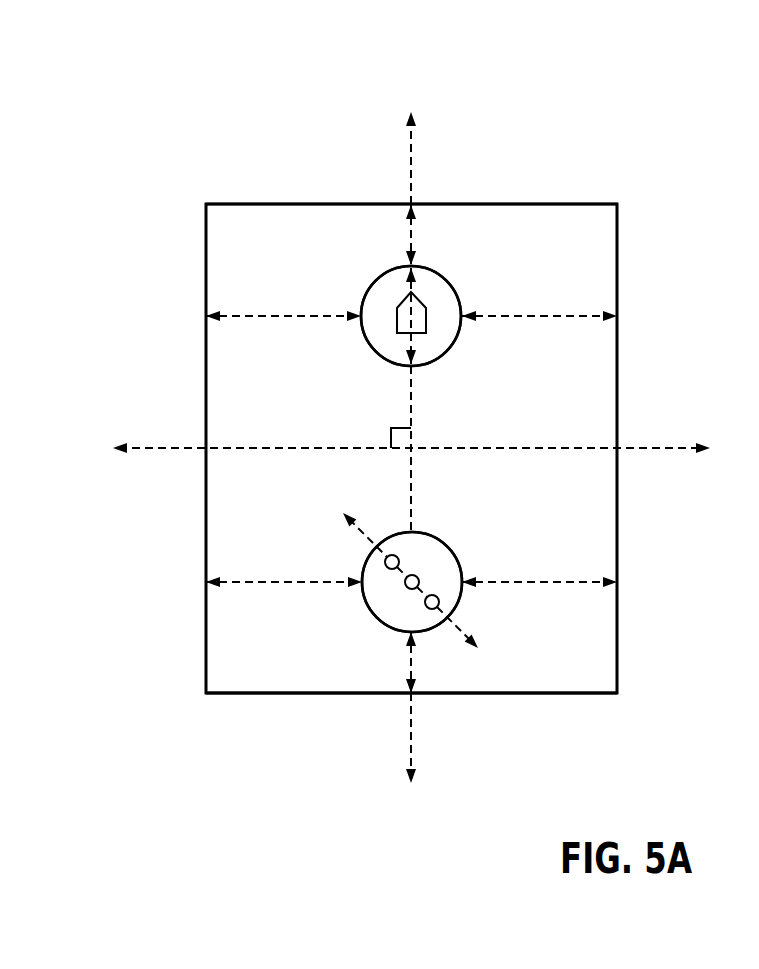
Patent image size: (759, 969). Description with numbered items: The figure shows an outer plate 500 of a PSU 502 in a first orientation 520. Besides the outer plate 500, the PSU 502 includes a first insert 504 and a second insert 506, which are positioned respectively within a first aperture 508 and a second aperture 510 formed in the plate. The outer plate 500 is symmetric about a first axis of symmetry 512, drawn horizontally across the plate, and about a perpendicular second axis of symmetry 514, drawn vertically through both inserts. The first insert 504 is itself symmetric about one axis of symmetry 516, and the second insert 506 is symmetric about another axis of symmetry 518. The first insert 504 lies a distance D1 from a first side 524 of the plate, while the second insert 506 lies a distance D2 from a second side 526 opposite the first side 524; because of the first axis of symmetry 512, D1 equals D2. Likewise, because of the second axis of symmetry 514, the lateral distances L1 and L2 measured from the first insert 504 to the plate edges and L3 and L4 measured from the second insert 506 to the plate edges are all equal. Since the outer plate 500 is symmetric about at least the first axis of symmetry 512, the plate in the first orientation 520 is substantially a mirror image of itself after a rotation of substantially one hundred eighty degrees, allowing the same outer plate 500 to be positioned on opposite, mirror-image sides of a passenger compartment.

The outer plate 500 is at (558, 660).
The PSU 502 is at (300, 112).
The first insert 504 is at (372, 356).
The second insert 506 is at (365, 603).
The first aperture 508 is at (478, 270).
The second aperture 510 is at (452, 657).
The first axis of symmetry 512 is at (560, 447).
The second axis of symmetry 514 is at (411, 474).
The axis of symmetry 516 is at (411, 292).
The axis of symmetry 518 is at (368, 540).
The first orientation 520 is at (270, 762).
The first side 524 is at (245, 204).
The second side 526 is at (240, 693).
The distance L1 is at (290, 316).
The distance L2 is at (538, 316).
The distance L3 is at (272, 582).
The distance L4 is at (538, 582).
The distance D1 is at (410, 236).
The distance D2 is at (410, 662).